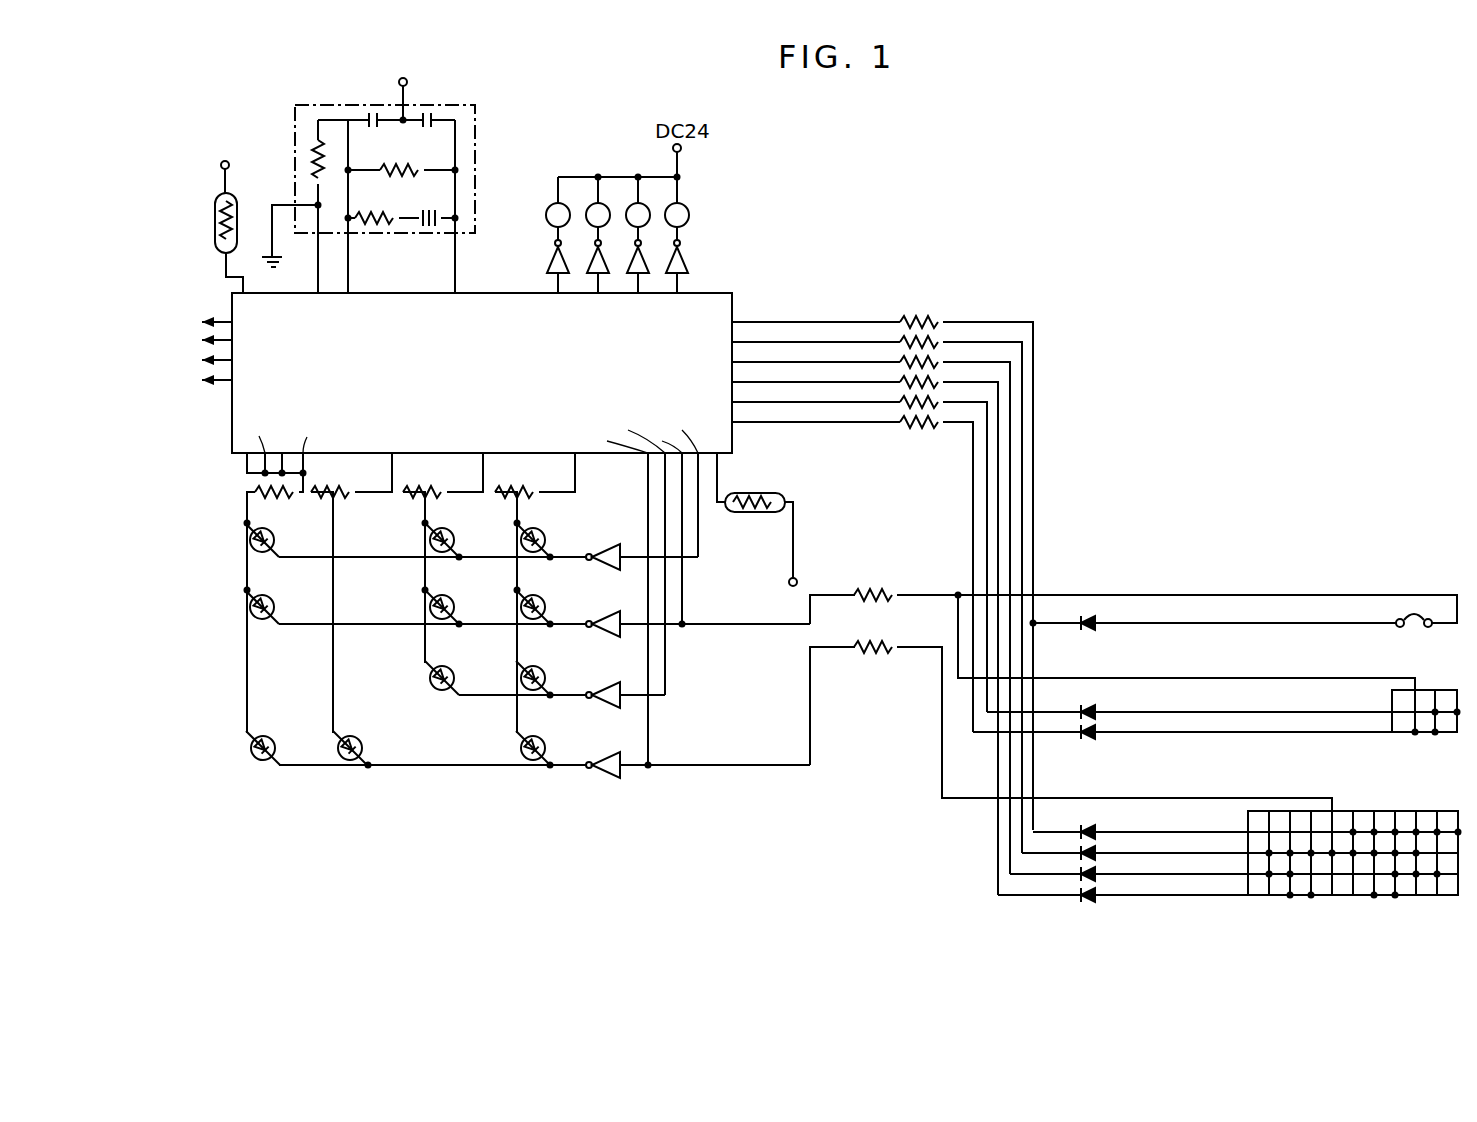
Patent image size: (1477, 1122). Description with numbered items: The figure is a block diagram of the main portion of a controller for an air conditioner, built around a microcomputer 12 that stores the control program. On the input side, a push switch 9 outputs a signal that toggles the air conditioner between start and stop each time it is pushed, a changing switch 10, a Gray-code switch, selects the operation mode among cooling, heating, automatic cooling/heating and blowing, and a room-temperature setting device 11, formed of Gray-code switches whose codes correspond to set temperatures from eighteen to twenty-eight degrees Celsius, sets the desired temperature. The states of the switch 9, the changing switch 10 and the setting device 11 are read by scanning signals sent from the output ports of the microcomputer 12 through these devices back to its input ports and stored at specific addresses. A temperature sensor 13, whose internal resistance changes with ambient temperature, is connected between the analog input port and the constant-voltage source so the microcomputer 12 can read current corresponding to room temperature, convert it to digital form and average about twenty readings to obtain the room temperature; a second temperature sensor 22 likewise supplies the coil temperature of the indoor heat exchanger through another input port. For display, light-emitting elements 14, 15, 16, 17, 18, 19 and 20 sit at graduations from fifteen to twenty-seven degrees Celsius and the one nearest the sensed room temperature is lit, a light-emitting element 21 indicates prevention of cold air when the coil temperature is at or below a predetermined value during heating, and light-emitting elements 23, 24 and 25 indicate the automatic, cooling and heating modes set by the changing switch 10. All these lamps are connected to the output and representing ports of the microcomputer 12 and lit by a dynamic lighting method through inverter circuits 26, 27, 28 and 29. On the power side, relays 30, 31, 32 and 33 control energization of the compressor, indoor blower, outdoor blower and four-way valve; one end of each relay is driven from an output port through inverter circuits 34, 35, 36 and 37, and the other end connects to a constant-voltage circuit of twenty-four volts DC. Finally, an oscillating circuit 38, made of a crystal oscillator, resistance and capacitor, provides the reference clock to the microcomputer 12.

The push switch 9 is at (1412, 614).
The changing switch 10 is at (1454, 690).
The room-temperature setting device 11 is at (1452, 811).
The microcomputer 12 is at (232, 417).
The temperature sensor 13 is at (768, 514).
The light-emitting element 14 is at (545, 529).
The light-emitting element 15 is at (450, 529).
The light-emitting element 16 is at (545, 599).
The light-emitting element 17 is at (450, 599).
The light-emitting element 18 is at (544, 668).
The light-emitting element 19 is at (450, 666).
The light-emitting element 20 is at (523, 760).
The light-emitting element 21 is at (339, 760).
The temperature sensor 22 is at (215, 228).
The light-emitting element 23 is at (270, 533).
The light-emitting element 24 is at (270, 601).
The light-emitting element 25 is at (258, 760).
The inverter circuit 26 is at (599, 554).
The inverter circuit 27 is at (599, 622).
The inverter circuit 28 is at (604, 702).
The inverter circuit 29 is at (606, 772).
The relay 30 is at (686, 210).
The relay 31 is at (630, 203).
The relay 32 is at (590, 203).
The relay 33 is at (550, 203).
The inverter circuit 34 is at (673, 268).
The inverter circuit 35 is at (634, 268).
The inverter circuit 36 is at (594, 268).
The inverter circuit 37 is at (546, 268).
The oscillating circuit 38 is at (432, 105).